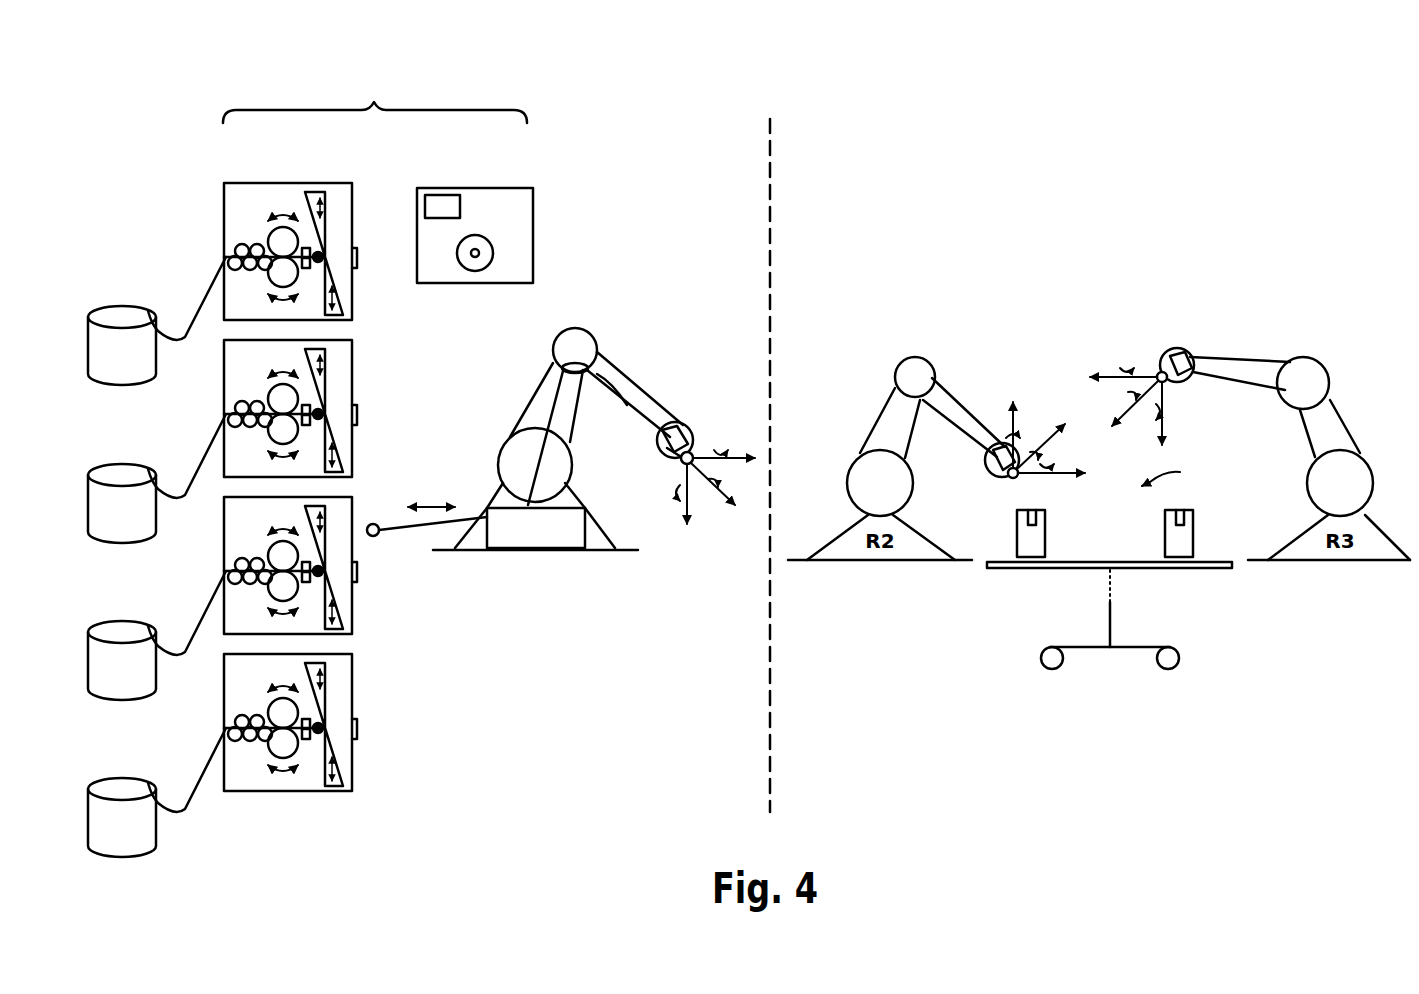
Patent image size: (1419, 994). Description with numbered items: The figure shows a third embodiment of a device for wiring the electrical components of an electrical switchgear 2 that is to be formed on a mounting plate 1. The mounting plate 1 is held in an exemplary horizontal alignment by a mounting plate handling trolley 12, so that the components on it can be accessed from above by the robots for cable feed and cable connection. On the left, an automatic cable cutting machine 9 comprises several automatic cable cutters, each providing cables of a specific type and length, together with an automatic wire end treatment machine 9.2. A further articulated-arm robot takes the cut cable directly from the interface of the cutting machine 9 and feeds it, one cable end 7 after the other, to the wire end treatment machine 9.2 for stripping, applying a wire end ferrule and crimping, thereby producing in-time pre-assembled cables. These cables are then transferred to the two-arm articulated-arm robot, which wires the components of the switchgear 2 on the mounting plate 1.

The mounting plate 1 is at (1222, 568).
The electrical switchgear 2 is at (1169, 467).
The cable end 7 is at (700, 453).
The automatic cable cutting machine 9 is at (375, 93).
The automatic wire end treatment machine 9.2 is at (472, 197).
The mounting plate handling trolley 12 is at (1112, 622).